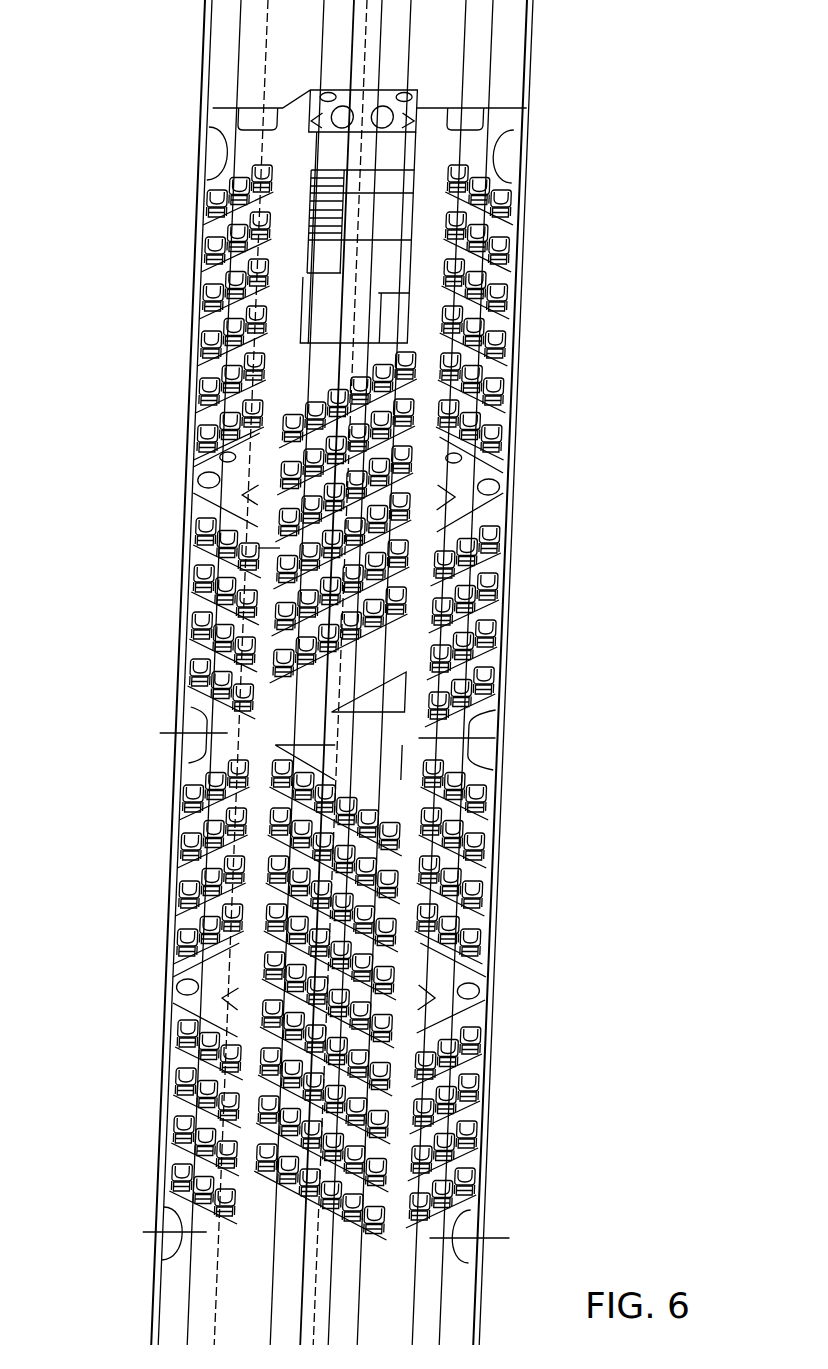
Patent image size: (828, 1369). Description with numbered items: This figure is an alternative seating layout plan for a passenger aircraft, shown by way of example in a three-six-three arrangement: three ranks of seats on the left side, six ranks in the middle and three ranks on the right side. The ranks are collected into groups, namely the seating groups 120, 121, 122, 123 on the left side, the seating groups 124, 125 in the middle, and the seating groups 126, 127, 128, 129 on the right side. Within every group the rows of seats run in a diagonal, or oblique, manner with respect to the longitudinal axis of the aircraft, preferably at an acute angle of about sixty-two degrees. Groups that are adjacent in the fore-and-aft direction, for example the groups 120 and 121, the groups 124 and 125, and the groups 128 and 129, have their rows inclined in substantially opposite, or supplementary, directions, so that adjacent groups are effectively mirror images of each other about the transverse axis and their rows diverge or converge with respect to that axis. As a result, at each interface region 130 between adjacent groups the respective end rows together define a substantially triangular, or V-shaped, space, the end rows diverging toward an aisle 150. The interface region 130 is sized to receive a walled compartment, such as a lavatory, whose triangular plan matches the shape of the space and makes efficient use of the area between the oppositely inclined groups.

The seating group 120 is at (185, 293).
The seating group 121 is at (183, 600).
The seating group 122 is at (180, 873).
The seating group 123 is at (160, 1100).
The seating group 124 is at (325, 385).
The seating group 125 is at (320, 1235).
The seating group 126 is at (520, 320).
The seating group 127 is at (510, 598).
The seating group 128 is at (495, 880).
The seating group 129 is at (487, 1092).
The interface region 130 is at (183, 487).
The aisle 150 is at (271, 540).